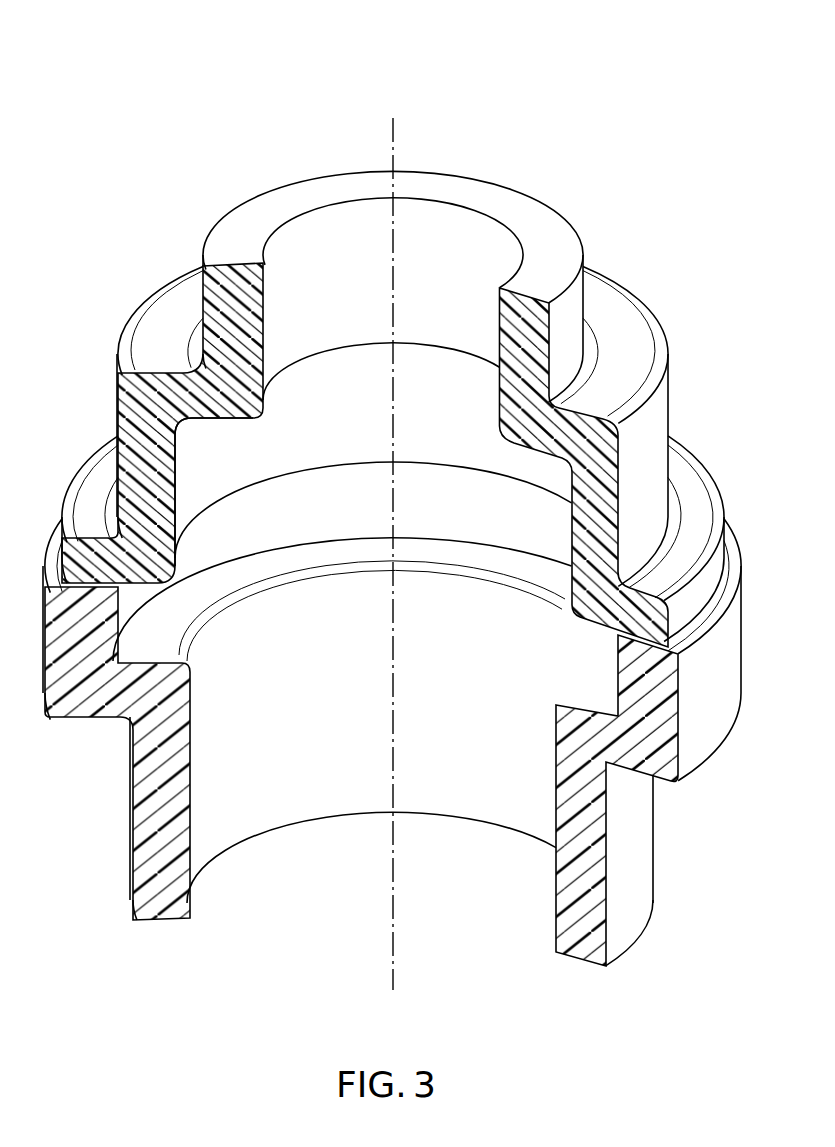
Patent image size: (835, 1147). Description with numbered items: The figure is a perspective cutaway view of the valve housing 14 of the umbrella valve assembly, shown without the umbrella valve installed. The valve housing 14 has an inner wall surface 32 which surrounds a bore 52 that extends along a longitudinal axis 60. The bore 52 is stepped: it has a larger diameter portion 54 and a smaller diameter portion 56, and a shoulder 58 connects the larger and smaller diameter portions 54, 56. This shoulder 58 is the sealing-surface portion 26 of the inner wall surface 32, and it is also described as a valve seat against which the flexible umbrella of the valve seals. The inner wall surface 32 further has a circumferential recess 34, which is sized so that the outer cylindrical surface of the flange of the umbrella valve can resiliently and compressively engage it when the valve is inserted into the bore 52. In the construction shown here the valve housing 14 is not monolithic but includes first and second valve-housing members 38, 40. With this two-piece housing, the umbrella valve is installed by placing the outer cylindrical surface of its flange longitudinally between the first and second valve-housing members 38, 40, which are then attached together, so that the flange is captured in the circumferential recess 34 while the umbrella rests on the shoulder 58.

The valve housing 14 is at (505, 102).
The sealing-surface portion 26 is at (245, 421).
The inner wall surface 32 is at (572, 530).
The circumferential recess 34 is at (581, 688).
The first valve-housing member 38 is at (501, 185).
The second valve-housing member 40 is at (130, 843).
The bore 52 is at (334, 242).
The larger diameter portion 54 is at (176, 490).
The smaller diameter portion 56 is at (264, 314).
The shoulder 58 is at (210, 421).
The longitudinal axis 60 is at (394, 130).